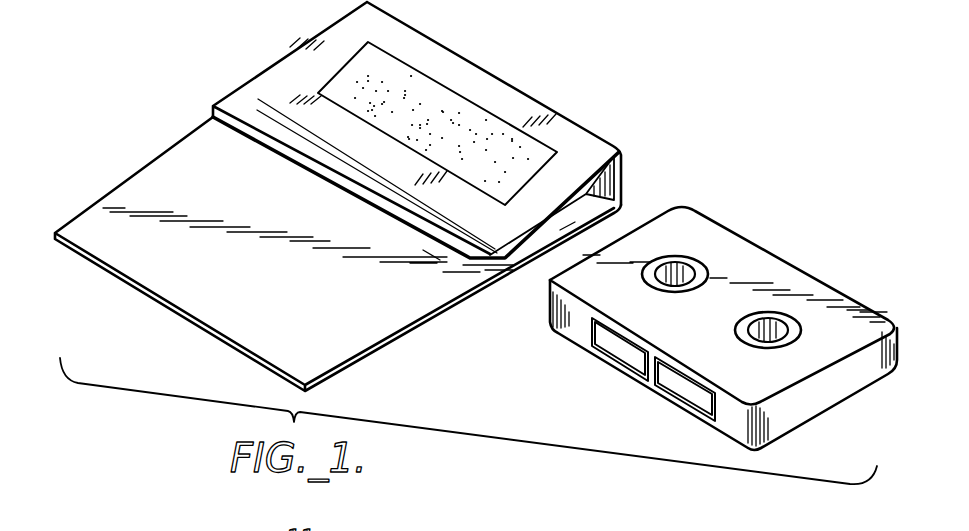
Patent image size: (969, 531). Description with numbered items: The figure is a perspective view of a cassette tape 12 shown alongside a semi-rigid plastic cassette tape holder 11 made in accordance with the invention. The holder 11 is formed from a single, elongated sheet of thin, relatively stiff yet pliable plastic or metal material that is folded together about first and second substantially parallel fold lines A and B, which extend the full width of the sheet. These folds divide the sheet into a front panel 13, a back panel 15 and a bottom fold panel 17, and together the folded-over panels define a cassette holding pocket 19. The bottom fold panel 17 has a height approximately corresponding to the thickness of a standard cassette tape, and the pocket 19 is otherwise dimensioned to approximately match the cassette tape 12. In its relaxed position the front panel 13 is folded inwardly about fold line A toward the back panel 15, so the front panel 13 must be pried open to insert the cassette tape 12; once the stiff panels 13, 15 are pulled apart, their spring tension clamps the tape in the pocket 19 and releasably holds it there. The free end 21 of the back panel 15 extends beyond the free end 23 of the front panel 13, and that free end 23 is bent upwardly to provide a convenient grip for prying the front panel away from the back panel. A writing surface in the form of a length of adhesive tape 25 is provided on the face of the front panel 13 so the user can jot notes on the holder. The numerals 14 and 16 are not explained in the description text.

The cassette tape holder 11 is at (375, 196).
The cassette tape 12 is at (724, 325).
The front panel 13 is at (326, 44).
The cassette front face with windows 14 is at (730, 420).
The back panel 15 is at (423, 250).
The cassette top edge 16 is at (828, 280).
The bottom fold panel 17 is at (622, 172).
The cassette holding pocket 19 is at (573, 213).
The free end of the back panel 21 is at (322, 356).
The free end of the front panel 23 is at (253, 117).
The adhesive tape 25 is at (453, 137).
The first fold line A is at (624, 143).
The second fold line B is at (626, 199).